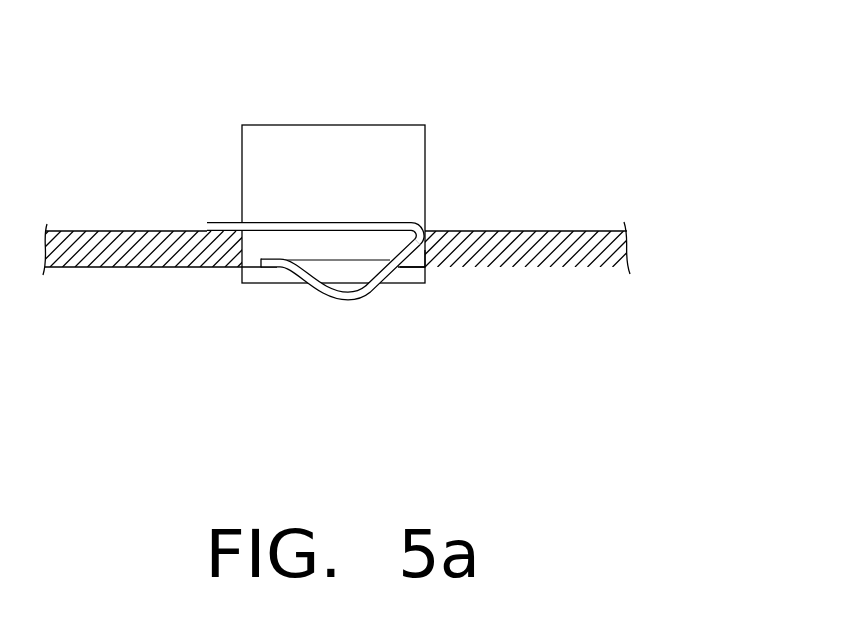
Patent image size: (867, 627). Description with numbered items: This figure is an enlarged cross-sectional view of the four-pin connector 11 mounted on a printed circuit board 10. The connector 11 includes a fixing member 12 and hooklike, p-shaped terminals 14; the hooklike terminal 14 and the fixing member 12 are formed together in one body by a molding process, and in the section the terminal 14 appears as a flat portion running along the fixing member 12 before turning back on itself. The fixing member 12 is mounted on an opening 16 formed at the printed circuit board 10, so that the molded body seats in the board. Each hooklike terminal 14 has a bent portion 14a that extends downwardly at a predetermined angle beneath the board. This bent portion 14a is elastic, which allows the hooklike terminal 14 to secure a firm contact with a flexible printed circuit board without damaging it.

The printed circuit board 10 is at (110, 233).
The 4-pin connector 11 is at (230, 95).
The fixing member 12 is at (330, 137).
The hooklike terminal 14 is at (218, 222).
The bent portion 14a is at (345, 299).
The opening 16 is at (425, 266).